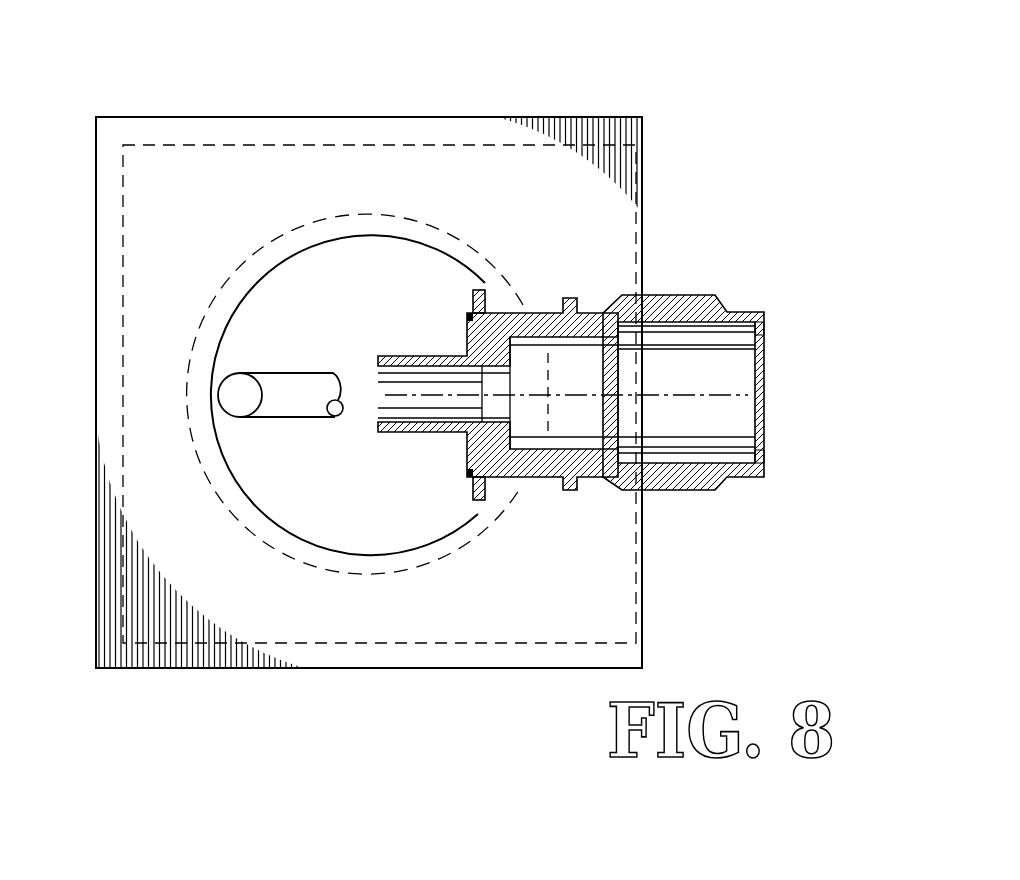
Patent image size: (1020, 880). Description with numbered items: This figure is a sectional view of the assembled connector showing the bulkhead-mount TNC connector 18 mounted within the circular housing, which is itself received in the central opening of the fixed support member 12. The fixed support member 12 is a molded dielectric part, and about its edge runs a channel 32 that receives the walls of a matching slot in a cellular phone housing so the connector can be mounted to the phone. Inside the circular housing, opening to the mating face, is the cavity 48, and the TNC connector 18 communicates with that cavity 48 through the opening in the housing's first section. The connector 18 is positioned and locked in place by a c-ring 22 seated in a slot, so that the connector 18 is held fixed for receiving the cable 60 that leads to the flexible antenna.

The fixed support member 12 is at (540, 108).
The BHD mount TNC connector 18 is at (783, 358).
The c-ring 22 is at (476, 498).
The channel 32 is at (300, 145).
The cavity 48 is at (375, 555).
The cable 60 is at (293, 380).